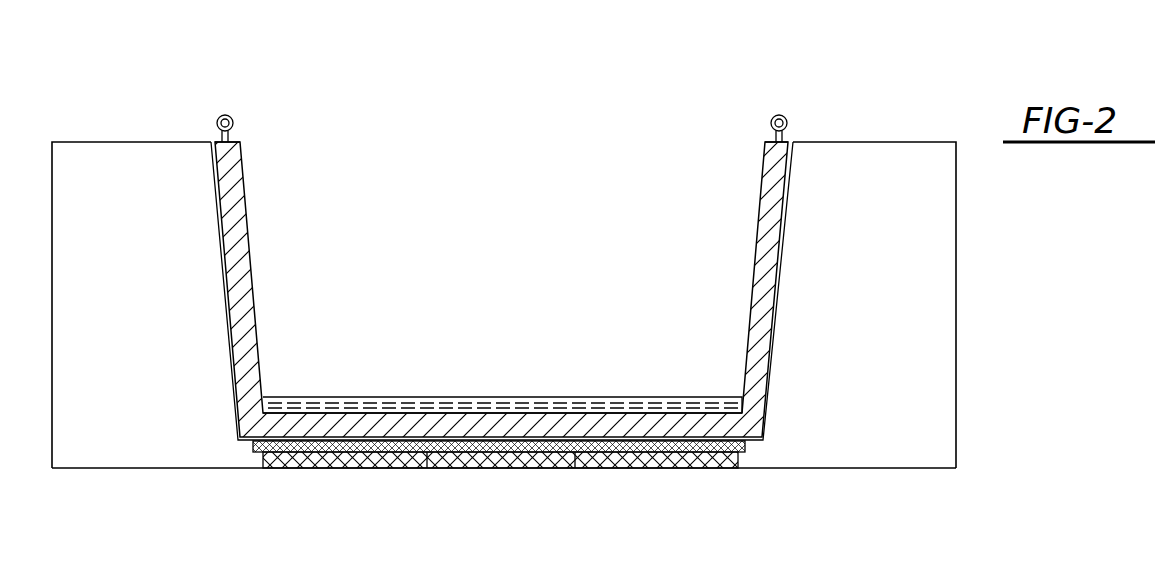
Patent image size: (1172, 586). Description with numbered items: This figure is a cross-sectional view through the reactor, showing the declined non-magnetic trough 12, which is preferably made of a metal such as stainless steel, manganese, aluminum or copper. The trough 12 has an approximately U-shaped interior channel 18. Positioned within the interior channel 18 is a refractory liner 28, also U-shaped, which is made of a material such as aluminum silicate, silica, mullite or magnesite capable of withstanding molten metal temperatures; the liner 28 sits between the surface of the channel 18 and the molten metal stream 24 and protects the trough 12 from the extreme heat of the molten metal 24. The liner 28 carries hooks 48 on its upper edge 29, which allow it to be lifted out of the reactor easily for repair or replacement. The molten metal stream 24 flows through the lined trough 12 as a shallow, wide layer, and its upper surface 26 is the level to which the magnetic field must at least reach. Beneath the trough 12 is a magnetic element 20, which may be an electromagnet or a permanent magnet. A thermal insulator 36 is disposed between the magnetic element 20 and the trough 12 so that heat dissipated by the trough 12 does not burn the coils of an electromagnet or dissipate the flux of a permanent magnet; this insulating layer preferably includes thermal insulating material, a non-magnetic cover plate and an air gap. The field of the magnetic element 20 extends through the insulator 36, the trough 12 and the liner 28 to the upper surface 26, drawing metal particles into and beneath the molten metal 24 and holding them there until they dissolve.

The non-magnetic trough 12 is at (898, 135).
The interior channel 18 is at (213, 140).
The magnetic element 20 is at (673, 476).
The molten metal stream 24 is at (413, 397).
The upper surface 26 is at (640, 388).
The refractory liner 28 is at (768, 198).
The upper edge 29 is at (240, 137).
The thermal insulator 36 is at (742, 452).
The hooks 48 is at (233, 119).